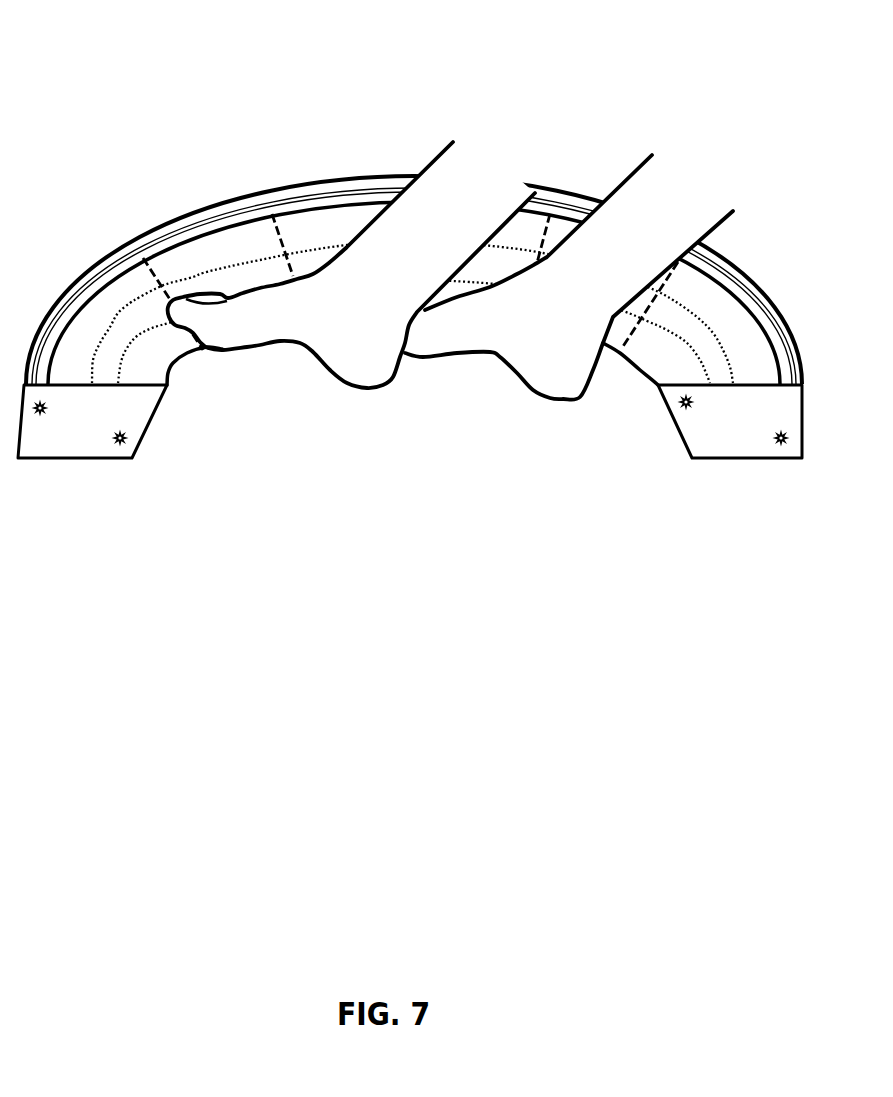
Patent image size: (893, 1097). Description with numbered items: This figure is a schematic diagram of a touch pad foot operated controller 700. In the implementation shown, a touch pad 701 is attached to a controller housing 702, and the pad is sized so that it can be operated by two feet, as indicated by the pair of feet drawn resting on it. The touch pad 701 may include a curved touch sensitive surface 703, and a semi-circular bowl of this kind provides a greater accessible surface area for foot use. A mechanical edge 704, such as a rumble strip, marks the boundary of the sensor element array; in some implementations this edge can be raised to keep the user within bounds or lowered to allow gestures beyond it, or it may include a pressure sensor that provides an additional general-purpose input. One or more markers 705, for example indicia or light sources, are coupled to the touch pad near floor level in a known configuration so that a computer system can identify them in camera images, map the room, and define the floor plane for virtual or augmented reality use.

The touch pad foot operated controller 700 is at (98, 68).
The touch pad 701 is at (647, 368).
The controller housing 702 is at (188, 212).
The curved touch sensitive surface 703 is at (228, 268).
The mechanical edge 704 is at (140, 247).
The markers 705 is at (120, 445).